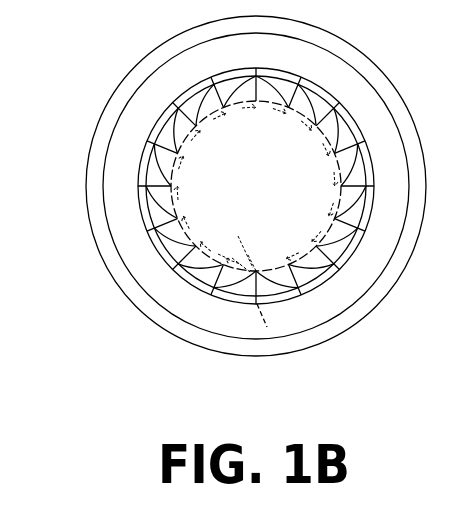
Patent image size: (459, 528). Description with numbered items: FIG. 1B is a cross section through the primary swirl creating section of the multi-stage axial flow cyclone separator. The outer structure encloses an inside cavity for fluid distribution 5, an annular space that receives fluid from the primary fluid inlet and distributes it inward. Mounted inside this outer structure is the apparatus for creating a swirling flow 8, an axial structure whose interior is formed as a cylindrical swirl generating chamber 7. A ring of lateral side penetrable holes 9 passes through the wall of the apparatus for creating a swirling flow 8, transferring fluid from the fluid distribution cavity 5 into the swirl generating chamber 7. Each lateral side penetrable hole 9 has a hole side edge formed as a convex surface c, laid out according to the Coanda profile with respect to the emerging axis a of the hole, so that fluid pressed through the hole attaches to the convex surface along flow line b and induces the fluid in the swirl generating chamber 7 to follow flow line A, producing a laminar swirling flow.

The inside cavity for fluid distribution 5 is at (148, 262).
The swirl generating chamber 7 is at (240, 186).
The apparatus for creating a swirling flow 8 is at (205, 280).
The lateral side penetrable hole 9 is at (220, 292).